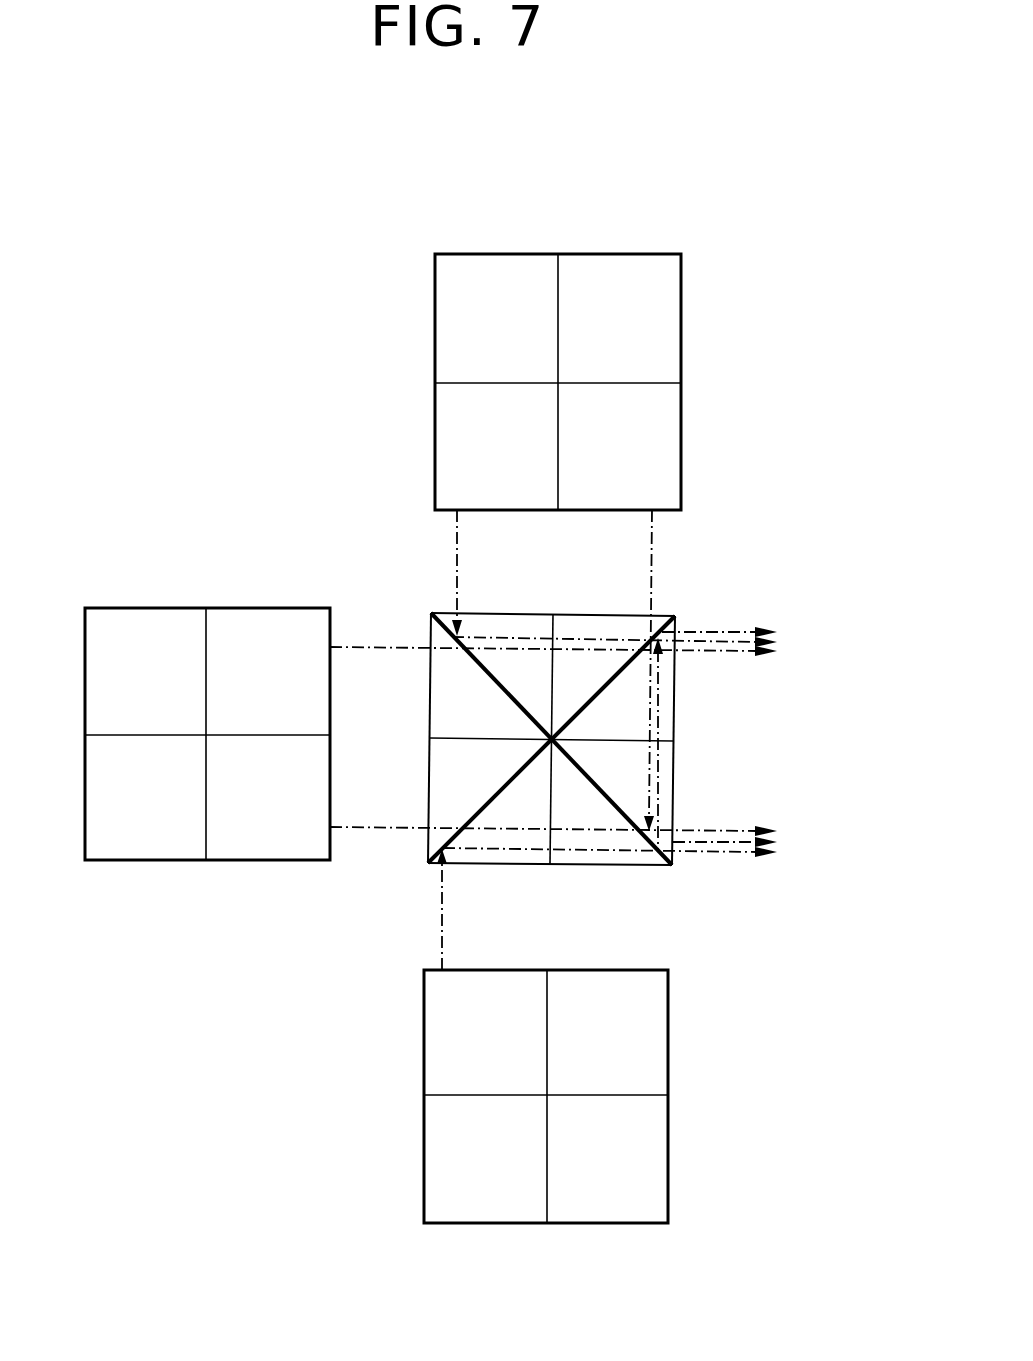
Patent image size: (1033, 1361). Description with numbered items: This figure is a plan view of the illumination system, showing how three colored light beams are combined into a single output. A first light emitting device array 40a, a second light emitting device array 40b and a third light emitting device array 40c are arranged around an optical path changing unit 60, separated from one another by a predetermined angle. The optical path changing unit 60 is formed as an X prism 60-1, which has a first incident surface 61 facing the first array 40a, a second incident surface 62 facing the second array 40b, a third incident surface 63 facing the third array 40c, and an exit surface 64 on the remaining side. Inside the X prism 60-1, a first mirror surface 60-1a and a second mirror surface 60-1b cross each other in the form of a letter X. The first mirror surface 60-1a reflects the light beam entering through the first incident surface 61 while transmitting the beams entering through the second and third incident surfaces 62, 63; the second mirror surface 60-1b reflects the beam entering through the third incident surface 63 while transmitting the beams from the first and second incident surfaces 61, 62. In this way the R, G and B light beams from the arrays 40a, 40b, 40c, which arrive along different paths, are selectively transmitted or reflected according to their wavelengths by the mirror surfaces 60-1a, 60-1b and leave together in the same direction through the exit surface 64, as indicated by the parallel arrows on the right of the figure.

The first light emitting device array 40a is at (497, 265).
The second light emitting device array 40b is at (147, 618).
The third light emitting device array 40c is at (482, 1212).
The optical path changing unit 60 is at (573, 735).
The X prism 60-1 is at (613, 750).
The first mirror surface 60-1a is at (487, 668).
The second mirror surface 60-1b is at (482, 812).
The first incident surface 61 is at (596, 612).
The second incident surface 62 is at (430, 765).
The third incident surface 63 is at (599, 866).
The exit surface 64 is at (675, 722).